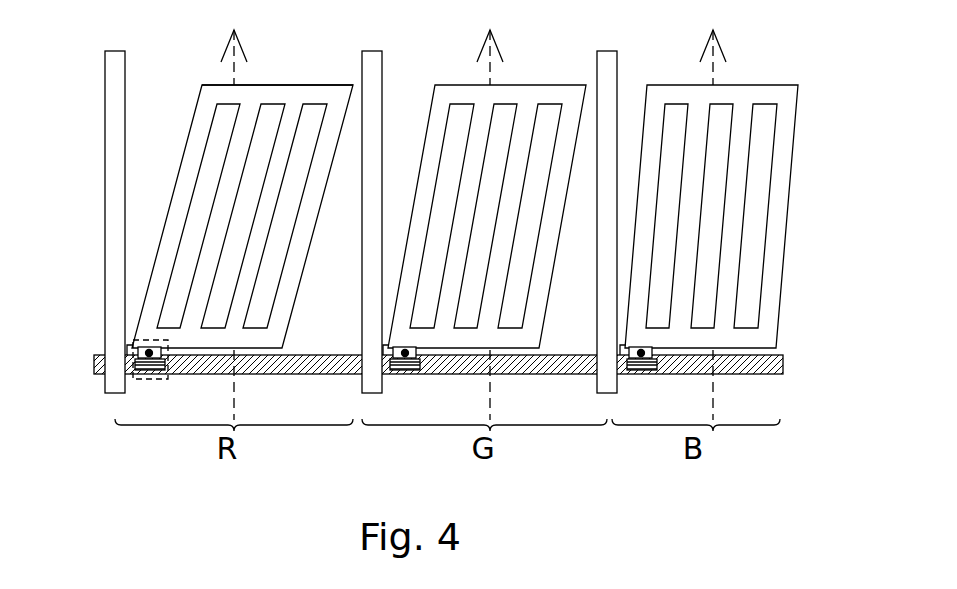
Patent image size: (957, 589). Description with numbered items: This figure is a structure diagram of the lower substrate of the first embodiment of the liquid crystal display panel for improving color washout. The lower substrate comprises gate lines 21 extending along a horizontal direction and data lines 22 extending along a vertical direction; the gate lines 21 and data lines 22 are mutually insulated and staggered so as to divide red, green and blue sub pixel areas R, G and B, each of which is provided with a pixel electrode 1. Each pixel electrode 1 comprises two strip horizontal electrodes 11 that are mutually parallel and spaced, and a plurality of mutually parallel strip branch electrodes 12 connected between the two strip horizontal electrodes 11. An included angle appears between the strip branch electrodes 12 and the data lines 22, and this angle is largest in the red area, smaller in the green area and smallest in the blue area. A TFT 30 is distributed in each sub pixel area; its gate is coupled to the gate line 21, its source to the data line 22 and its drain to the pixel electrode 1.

The pixel electrode 1 is at (240, 188).
The strip horizontal electrode 11 is at (228, 93).
The strip branch electrode 12 is at (203, 133).
The gate line 21 is at (772, 364).
The data line 22 is at (113, 197).
The TFT 30 is at (133, 349).